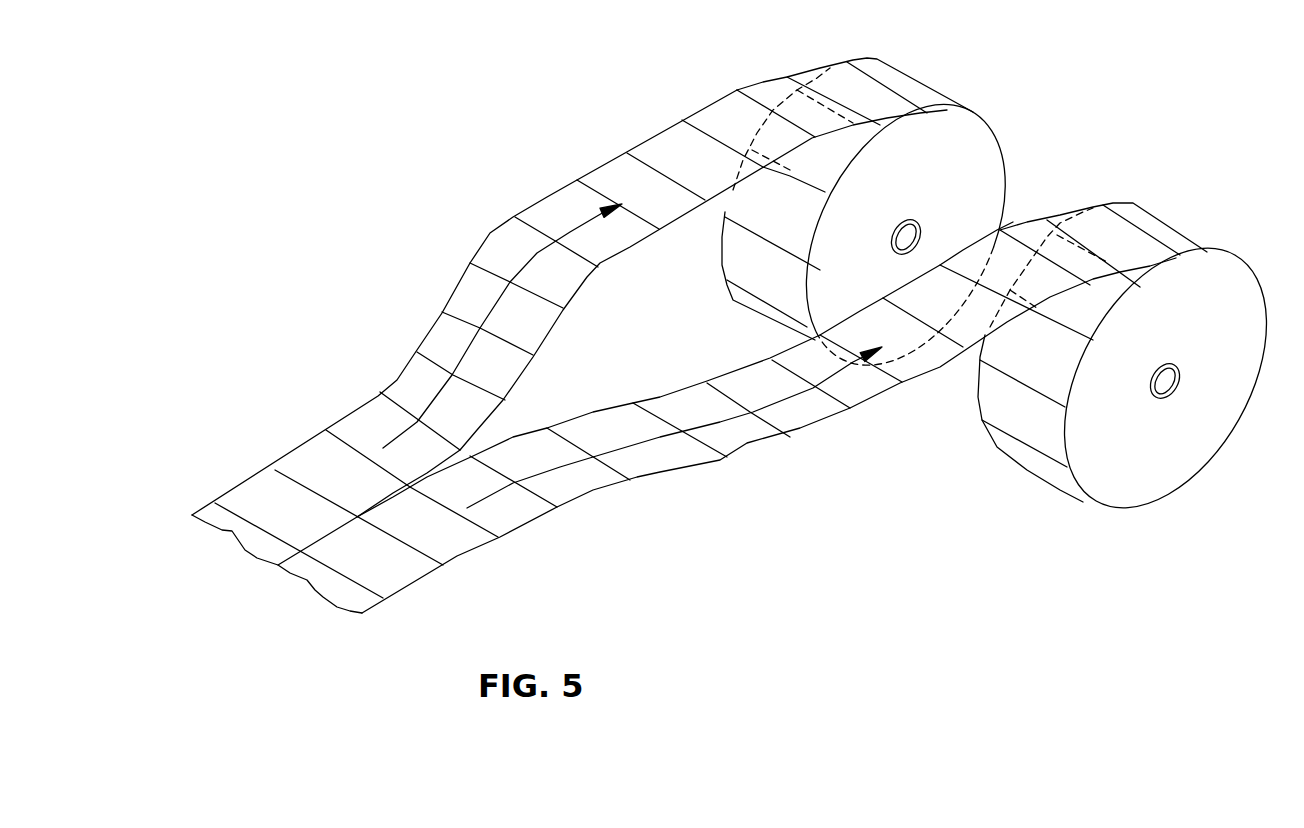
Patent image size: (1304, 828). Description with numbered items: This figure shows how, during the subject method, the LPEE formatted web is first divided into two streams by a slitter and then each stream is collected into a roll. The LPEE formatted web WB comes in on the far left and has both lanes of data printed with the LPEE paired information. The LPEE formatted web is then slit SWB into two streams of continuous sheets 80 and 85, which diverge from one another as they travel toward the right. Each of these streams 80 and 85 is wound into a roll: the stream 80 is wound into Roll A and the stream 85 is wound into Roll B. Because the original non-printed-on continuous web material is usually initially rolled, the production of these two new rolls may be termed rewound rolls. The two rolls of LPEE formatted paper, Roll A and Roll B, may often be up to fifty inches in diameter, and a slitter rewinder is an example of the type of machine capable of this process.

The stream of continuous sheets 80 is at (662, 130).
The stream of continuous sheets 85 is at (740, 373).
The LPEE formatted web WB is at (264, 435).
The slit web SWB is at (389, 366).
The Roll A is at (863, 211).
The Roll B is at (1141, 372).